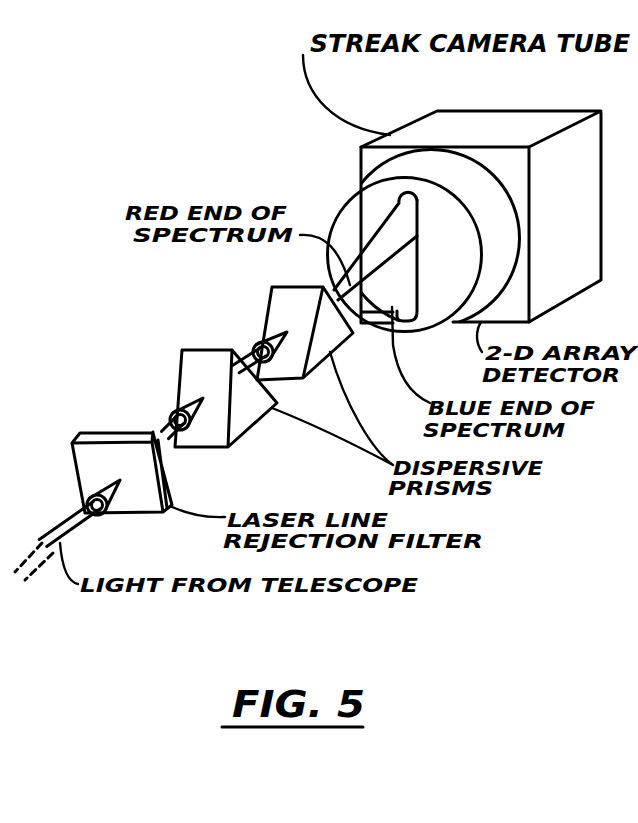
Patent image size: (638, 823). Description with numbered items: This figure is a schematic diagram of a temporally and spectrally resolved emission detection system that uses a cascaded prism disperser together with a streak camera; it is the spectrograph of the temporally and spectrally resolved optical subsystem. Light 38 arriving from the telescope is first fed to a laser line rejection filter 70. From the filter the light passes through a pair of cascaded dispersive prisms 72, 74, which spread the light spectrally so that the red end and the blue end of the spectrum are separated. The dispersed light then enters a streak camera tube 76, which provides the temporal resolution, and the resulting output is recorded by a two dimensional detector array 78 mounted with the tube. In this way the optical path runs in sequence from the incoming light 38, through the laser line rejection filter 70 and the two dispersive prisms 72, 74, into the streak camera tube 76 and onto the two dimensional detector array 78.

The light 38 is at (78, 527).
The laser line rejection filter 70 is at (167, 482).
The dispersive prism 72 is at (182, 371).
The dispersive prism 74 is at (272, 300).
The streak camera tube 76 is at (357, 193).
The two dimensional detector array 78 is at (527, 118).